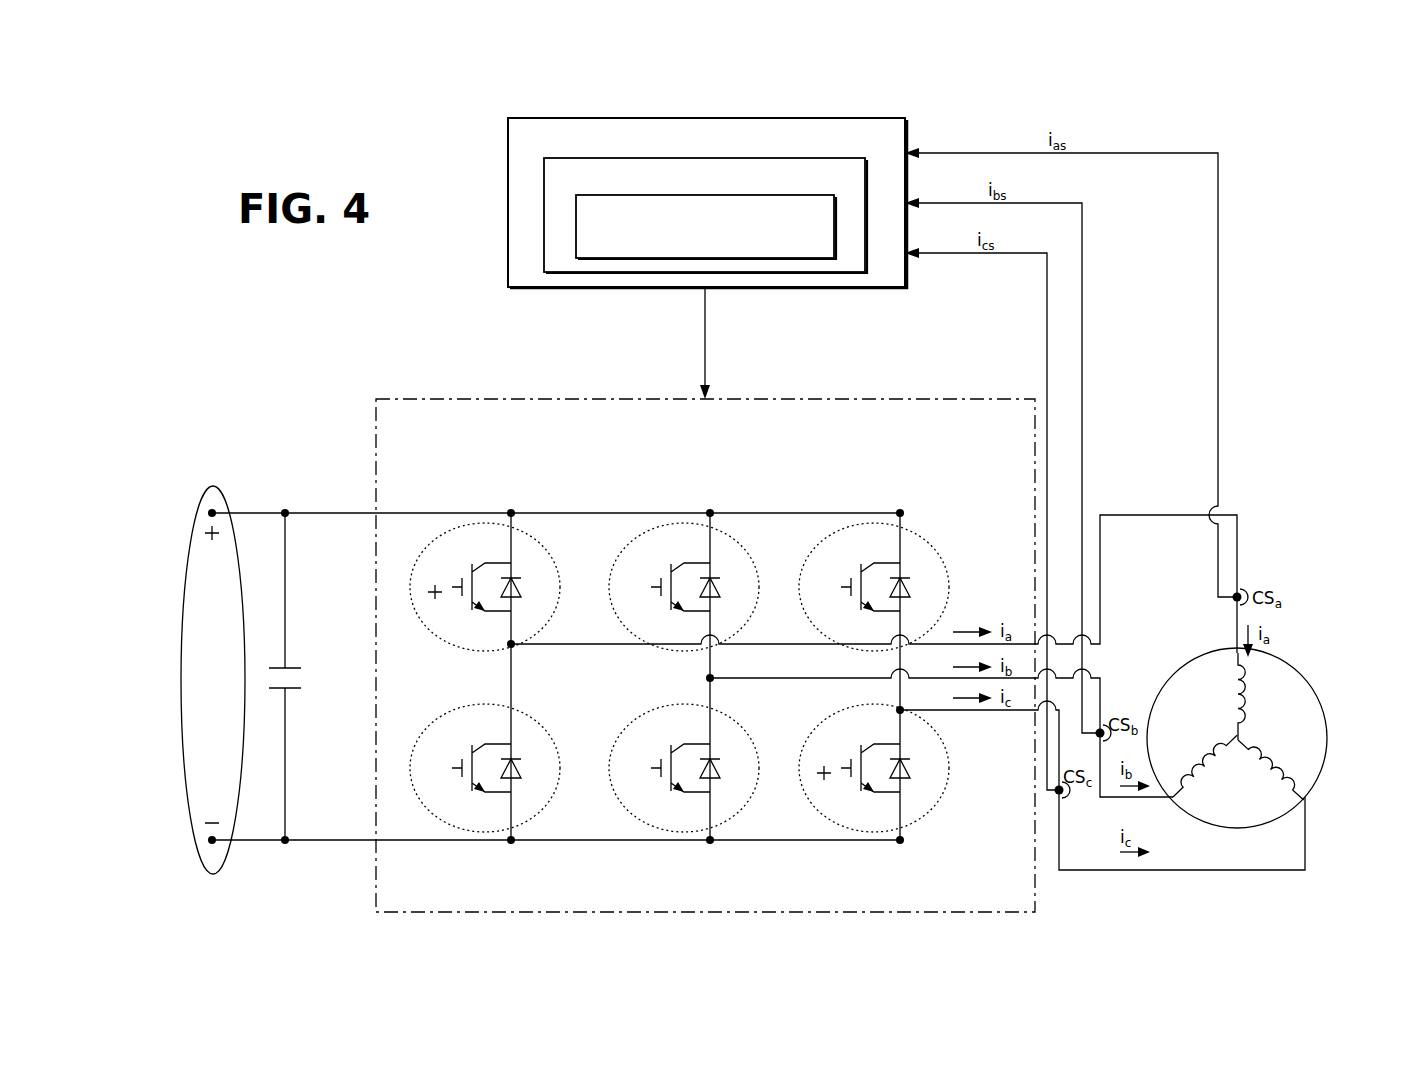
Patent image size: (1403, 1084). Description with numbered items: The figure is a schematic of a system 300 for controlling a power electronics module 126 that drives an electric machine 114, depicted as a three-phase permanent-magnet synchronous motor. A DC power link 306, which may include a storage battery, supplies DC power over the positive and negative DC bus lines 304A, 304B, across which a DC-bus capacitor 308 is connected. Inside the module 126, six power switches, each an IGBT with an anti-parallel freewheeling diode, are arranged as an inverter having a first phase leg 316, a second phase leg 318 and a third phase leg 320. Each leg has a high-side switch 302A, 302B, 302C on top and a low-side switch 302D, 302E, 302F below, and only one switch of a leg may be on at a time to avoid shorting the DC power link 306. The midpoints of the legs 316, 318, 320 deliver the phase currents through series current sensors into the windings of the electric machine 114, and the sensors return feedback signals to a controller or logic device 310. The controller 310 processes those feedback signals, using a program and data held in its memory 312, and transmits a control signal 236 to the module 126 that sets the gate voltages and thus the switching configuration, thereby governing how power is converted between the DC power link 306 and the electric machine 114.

The system 300 is at (997, 109).
The controller 310 is at (705, 118).
The memory 312 is at (857, 158).
The power electronics module 126 is at (558, 399).
The control signal 236 is at (697, 337).
The DC power link 306 is at (210, 487).
The positive DC bus 304A is at (344, 500).
The negative DC bus 304B is at (344, 856).
The DC-bus capacitor 308 is at (285, 690).
The high-side switch 302A is at (473, 523).
The high-side switch 302B is at (672, 523).
The high-side switch 302C is at (862, 523).
The low-side switch 302D is at (481, 832).
The low-side switch 302E is at (680, 832).
The low-side switch 302F is at (870, 832).
The first phase leg 316 is at (509, 647).
The second phase leg 318 is at (709, 679).
The third phase leg 320 is at (899, 709).
The electric machine 114 is at (1302, 672).